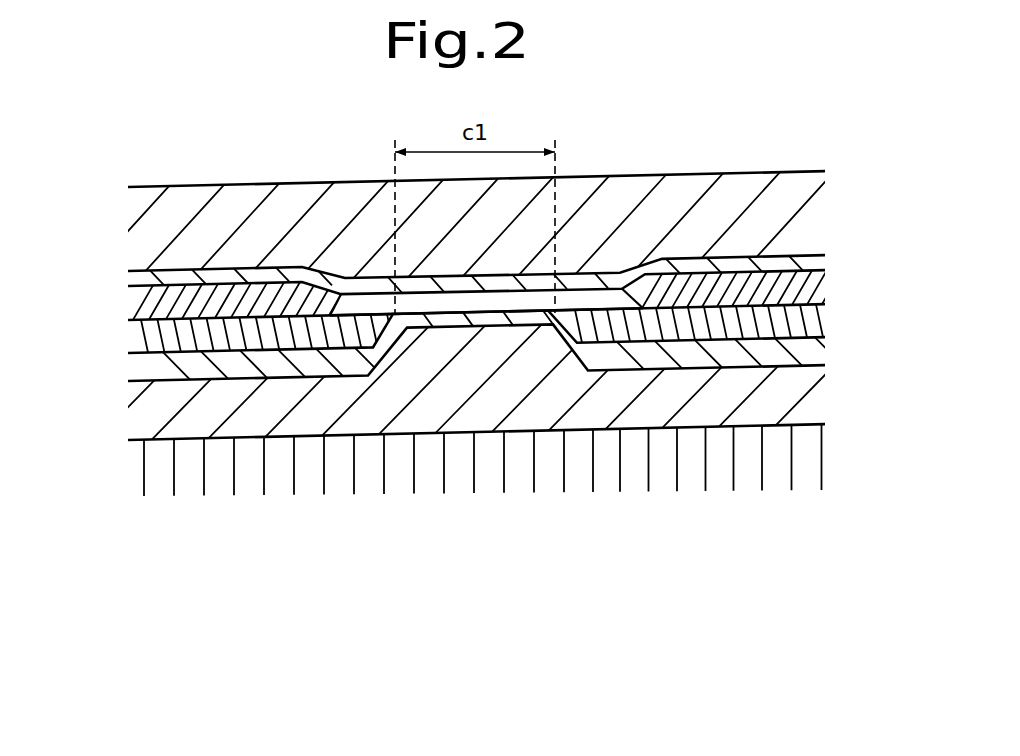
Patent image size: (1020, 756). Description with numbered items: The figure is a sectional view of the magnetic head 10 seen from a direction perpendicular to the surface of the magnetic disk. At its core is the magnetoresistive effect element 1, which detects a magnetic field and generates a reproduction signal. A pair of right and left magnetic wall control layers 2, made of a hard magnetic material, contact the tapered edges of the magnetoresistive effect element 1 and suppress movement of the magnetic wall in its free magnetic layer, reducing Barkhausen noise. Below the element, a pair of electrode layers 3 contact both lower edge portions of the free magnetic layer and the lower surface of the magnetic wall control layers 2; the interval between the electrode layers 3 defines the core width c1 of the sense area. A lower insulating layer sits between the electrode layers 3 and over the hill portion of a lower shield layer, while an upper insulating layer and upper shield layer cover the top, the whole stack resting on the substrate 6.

The magnetic head 10 is at (768, 156).
The magnetoresistive effect element 1 is at (576, 299).
The magnetic wall control layers 2 is at (805, 291).
The electrode layers 3 is at (800, 327).
The substrate 6 is at (805, 460).